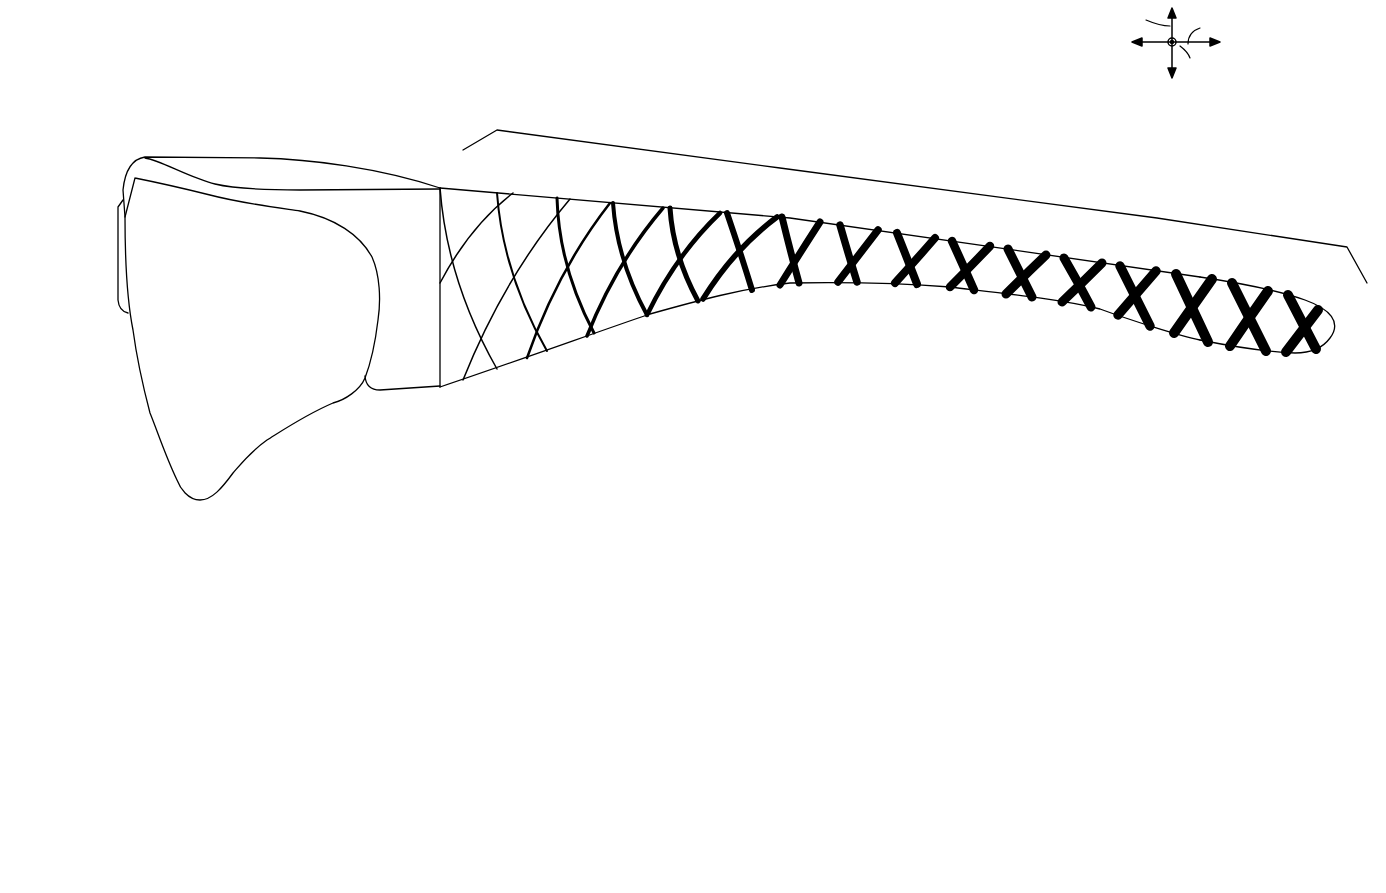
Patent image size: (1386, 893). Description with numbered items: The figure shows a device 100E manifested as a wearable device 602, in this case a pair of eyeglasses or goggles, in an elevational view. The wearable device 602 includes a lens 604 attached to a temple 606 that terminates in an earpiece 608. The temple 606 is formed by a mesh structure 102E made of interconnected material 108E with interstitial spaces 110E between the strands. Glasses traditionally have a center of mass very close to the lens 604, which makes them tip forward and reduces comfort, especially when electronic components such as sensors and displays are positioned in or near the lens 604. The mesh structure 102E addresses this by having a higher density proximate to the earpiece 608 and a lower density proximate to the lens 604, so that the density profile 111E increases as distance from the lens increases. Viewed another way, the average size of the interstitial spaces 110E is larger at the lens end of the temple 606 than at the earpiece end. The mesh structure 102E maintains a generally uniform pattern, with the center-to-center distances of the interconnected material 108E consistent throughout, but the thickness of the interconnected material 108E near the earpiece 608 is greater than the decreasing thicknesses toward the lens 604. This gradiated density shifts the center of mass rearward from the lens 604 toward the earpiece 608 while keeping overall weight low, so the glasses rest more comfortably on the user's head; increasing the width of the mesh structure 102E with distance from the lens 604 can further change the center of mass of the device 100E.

The device 100E is at (205, 84).
The lens 604 is at (252, 339).
The temple 606 is at (863, 180).
The mesh structure 102E is at (911, 300).
The density profile 111E is at (640, 361).
The interstitial spaces 110E is at (514, 348).
The interconnected material 108E is at (1200, 340).
The earpiece 608 is at (1347, 407).
The wearable device 602 is at (703, 313).